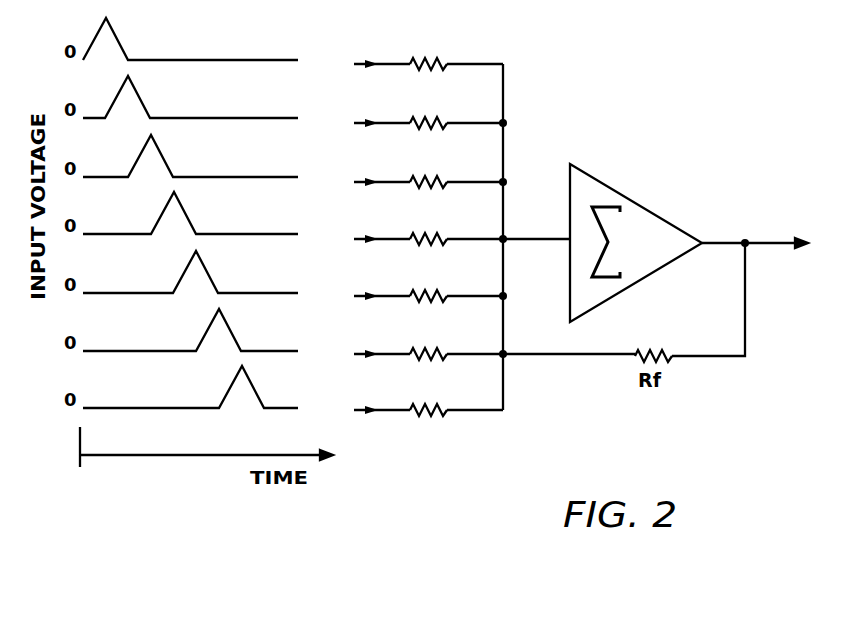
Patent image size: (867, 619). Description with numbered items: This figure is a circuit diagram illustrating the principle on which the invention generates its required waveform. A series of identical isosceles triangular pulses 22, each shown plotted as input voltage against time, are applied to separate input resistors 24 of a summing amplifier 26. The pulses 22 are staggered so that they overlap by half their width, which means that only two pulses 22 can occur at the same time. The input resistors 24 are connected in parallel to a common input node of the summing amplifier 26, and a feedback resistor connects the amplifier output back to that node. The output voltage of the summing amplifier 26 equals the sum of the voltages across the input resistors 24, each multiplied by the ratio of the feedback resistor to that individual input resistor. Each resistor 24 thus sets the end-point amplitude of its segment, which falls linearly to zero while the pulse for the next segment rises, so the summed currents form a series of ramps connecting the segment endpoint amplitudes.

The isosceles triangular pulses 22 is at (283, 389).
The input resistors 24 is at (448, 425).
The summing amplifier 26 is at (647, 208).